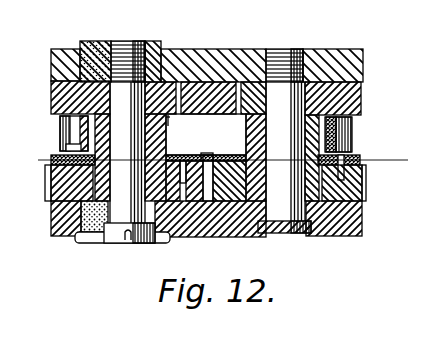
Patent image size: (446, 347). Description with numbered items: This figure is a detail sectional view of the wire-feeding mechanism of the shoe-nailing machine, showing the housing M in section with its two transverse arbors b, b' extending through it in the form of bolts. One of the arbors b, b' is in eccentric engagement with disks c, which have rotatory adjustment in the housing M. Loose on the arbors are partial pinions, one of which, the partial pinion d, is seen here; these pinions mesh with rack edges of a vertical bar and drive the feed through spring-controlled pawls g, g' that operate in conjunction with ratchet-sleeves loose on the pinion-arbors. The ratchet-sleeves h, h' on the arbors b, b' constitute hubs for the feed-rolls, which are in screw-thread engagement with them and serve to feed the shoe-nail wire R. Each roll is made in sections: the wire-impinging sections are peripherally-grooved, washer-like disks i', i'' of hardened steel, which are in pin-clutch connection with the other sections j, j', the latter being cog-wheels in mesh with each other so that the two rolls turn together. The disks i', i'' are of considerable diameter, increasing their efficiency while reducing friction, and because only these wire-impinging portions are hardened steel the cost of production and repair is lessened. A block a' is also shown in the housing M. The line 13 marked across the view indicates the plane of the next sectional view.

The housing M is at (232, 31).
The block a' is at (229, 67).
The disks c is at (87, 34).
The arbor b is at (127, 132).
The arbor b' is at (284, 141).
The partial pinion d is at (43, 90).
The pawls g is at (57, 133).
The peripherally-grooved disk i' is at (68, 149).
The cog-wheel section j is at (57, 183).
The pawls g' is at (355, 134).
The peripherally-grooved disk i'' is at (351, 159).
The cog-wheel section j' is at (355, 183).
The ratchet-sleeve h is at (206, 157).
The ratchet-sleeve h' is at (229, 164).
The shoe-nail wire R is at (200, 145).
The section line 13 is at (392, 157).